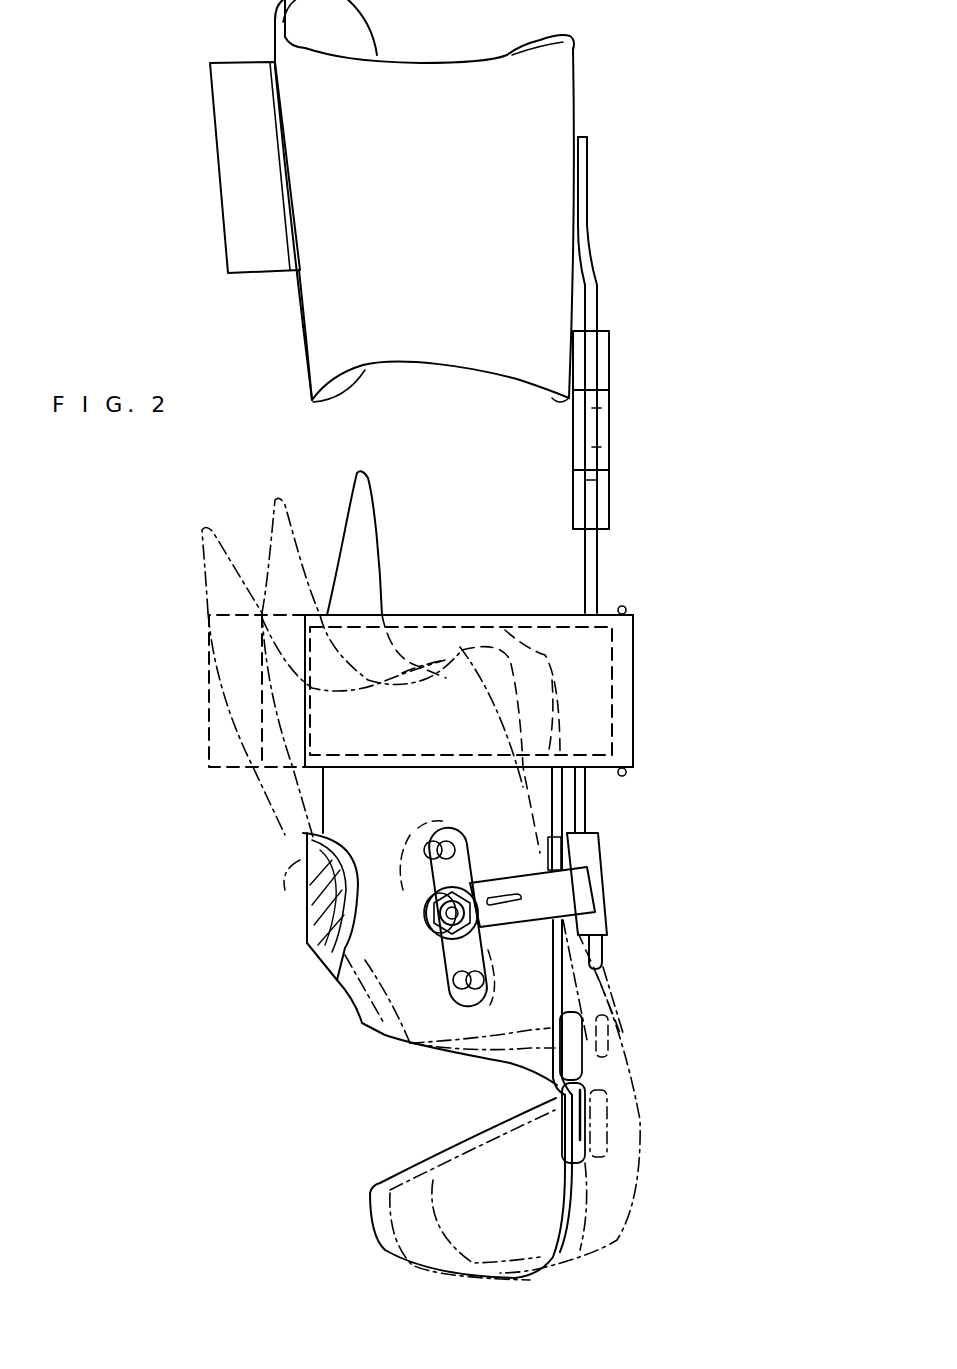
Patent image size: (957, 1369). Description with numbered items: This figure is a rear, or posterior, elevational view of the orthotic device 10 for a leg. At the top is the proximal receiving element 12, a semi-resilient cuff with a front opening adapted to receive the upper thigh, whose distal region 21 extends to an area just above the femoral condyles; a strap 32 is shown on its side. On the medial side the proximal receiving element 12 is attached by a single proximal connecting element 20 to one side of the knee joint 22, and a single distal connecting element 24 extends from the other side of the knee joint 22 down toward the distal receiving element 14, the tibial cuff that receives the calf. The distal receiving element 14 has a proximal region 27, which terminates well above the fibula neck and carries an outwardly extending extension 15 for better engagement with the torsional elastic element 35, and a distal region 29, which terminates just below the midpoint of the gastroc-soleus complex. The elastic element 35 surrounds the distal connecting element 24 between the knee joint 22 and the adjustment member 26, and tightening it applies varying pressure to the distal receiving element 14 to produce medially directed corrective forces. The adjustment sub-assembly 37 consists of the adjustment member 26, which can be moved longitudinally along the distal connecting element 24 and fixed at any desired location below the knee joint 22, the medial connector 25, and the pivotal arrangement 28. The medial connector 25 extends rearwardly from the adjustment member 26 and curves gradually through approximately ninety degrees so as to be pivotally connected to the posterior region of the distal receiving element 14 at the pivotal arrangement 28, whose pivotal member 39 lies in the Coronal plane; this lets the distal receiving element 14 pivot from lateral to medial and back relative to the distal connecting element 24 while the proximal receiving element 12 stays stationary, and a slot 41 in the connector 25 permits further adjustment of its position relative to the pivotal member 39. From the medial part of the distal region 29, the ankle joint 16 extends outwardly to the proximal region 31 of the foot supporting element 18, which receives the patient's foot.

The orthotic device 10 is at (696, 433).
The proximal receiving element 12 is at (557, 80).
The distal receiving element 14 is at (357, 1013).
The extension 15 is at (375, 510).
The ankle joint 16 is at (557, 1097).
The foot supporting element 18 is at (370, 1205).
The proximal connecting element 20 is at (590, 273).
The distal region 21 is at (312, 340).
The knee joint 22 is at (610, 510).
The distal connecting element 24 is at (583, 797).
The medial connector 25 is at (527, 890).
The adjustment member 26 is at (597, 922).
The proximal region 27 is at (328, 715).
The pivotal arrangement 28 is at (397, 878).
The distal region 29 is at (433, 1020).
The proximal region 31 is at (505, 1183).
The strap 32 is at (232, 172).
The torsional elastic element 35 is at (482, 636).
The adjustment sub-assembly 37 is at (613, 883).
The pivotal member 39 is at (450, 915).
The slot 41 is at (508, 910).